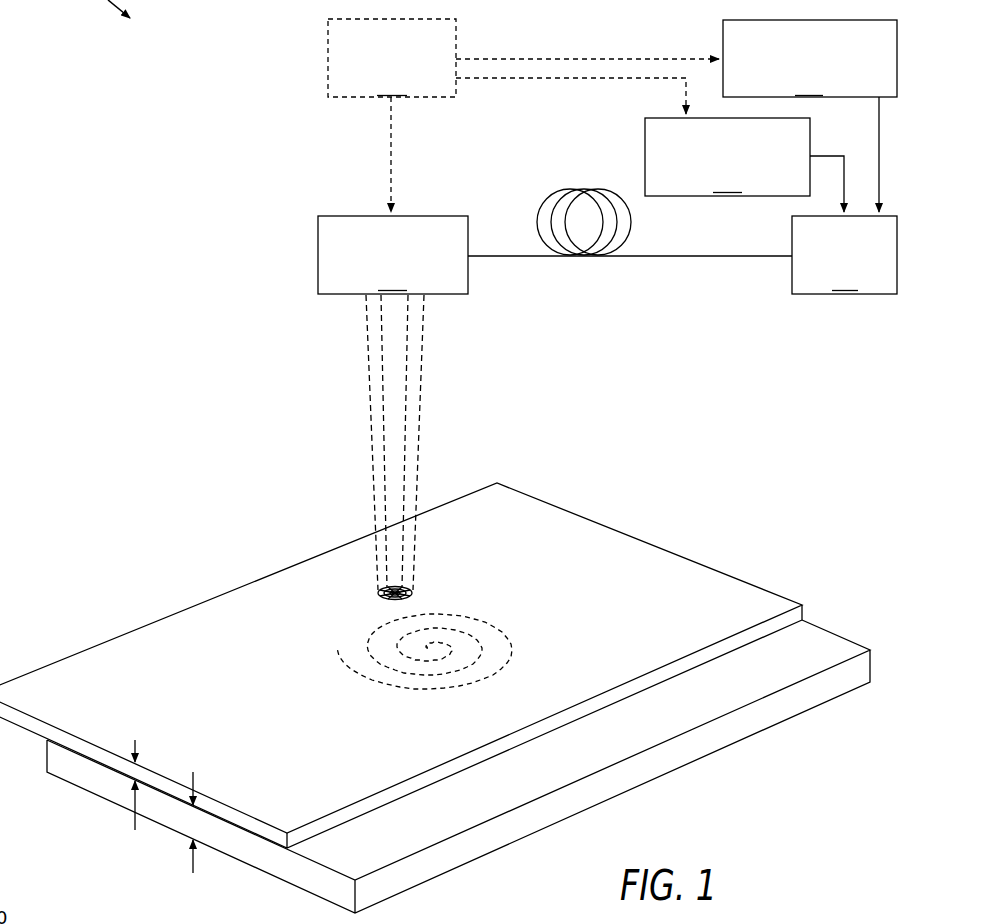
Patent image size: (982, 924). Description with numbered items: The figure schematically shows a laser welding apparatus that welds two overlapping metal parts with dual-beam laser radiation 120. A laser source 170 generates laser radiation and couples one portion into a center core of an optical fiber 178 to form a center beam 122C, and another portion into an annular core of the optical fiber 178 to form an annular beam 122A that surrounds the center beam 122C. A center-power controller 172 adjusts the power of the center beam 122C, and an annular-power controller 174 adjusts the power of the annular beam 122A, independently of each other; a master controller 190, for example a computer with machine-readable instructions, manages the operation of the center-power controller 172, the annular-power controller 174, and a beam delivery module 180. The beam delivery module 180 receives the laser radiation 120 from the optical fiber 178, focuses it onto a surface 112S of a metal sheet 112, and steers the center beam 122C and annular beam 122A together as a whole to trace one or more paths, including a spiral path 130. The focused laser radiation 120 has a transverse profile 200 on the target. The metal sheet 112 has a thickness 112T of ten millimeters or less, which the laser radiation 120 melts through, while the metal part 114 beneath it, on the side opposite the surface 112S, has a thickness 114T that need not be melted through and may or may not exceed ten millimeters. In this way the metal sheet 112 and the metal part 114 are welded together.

The master controller 190 is at (392, 58).
The beam delivery module 180 is at (393, 255).
The annular-power controller 174 is at (810, 58).
The center-power controller 172 is at (727, 157).
The laser source 170 is at (844, 255).
The optical fiber 178 is at (567, 188).
The laser radiation 120 is at (397, 442).
The center beam 122C is at (405, 380).
The annular beam 122A is at (418, 403).
The transverse profile 200 is at (372, 582).
The spiral path 130 is at (395, 693).
The metal sheet 112 is at (401, 665).
The surface 112S is at (587, 543).
The metal part 114 is at (840, 638).
The thickness 112T is at (132, 775).
The thickness 114T is at (184, 833).